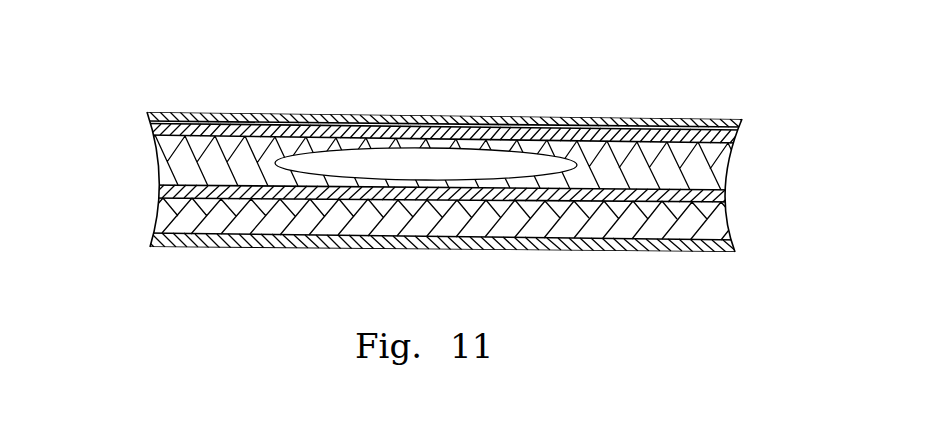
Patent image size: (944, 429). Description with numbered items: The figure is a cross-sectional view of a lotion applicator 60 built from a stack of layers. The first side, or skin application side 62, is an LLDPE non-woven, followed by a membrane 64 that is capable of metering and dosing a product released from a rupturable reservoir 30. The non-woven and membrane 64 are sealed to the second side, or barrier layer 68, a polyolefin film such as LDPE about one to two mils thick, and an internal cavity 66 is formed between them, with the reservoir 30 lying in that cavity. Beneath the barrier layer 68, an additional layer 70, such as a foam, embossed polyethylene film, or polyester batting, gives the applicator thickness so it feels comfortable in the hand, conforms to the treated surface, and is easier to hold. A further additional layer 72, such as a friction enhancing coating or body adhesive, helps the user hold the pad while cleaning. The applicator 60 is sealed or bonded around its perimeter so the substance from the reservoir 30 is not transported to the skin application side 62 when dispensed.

The lotion applicator 60 is at (262, 105).
The rupturable reservoir 30 is at (380, 167).
The skin application side 62 is at (680, 118).
The membrane 64 is at (733, 138).
The internal cavity 66 is at (202, 160).
The barrier layer 68 is at (157, 187).
The additional layer 70 is at (693, 223).
The additional layer 72 is at (232, 247).